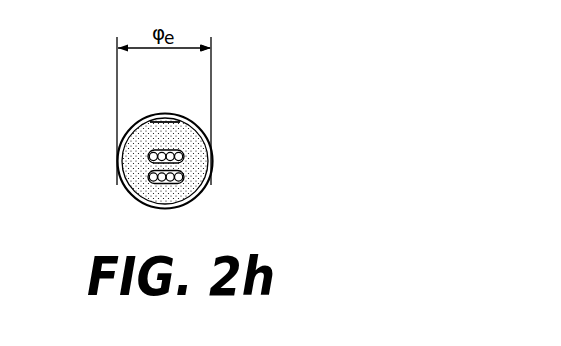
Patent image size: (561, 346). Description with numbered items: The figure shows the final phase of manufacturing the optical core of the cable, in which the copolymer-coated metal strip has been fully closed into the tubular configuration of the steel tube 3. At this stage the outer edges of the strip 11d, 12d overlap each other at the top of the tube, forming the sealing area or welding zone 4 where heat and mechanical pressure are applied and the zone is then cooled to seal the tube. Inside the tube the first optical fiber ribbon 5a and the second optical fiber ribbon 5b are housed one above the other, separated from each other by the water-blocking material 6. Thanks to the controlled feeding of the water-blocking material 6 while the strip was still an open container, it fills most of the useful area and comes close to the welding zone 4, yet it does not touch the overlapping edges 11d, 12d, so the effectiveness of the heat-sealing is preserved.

The steel tube 3 is at (229, 171).
The welding zone 4 is at (186, 98).
The water-blocking material 6 is at (133, 170).
The outer edge of the strip 12d is at (163, 113).
The outer edge of the strip 11d is at (156, 122).
The second optical fiber ribbon 5b is at (185, 151).
The first optical fiber ribbon 5a is at (170, 184).